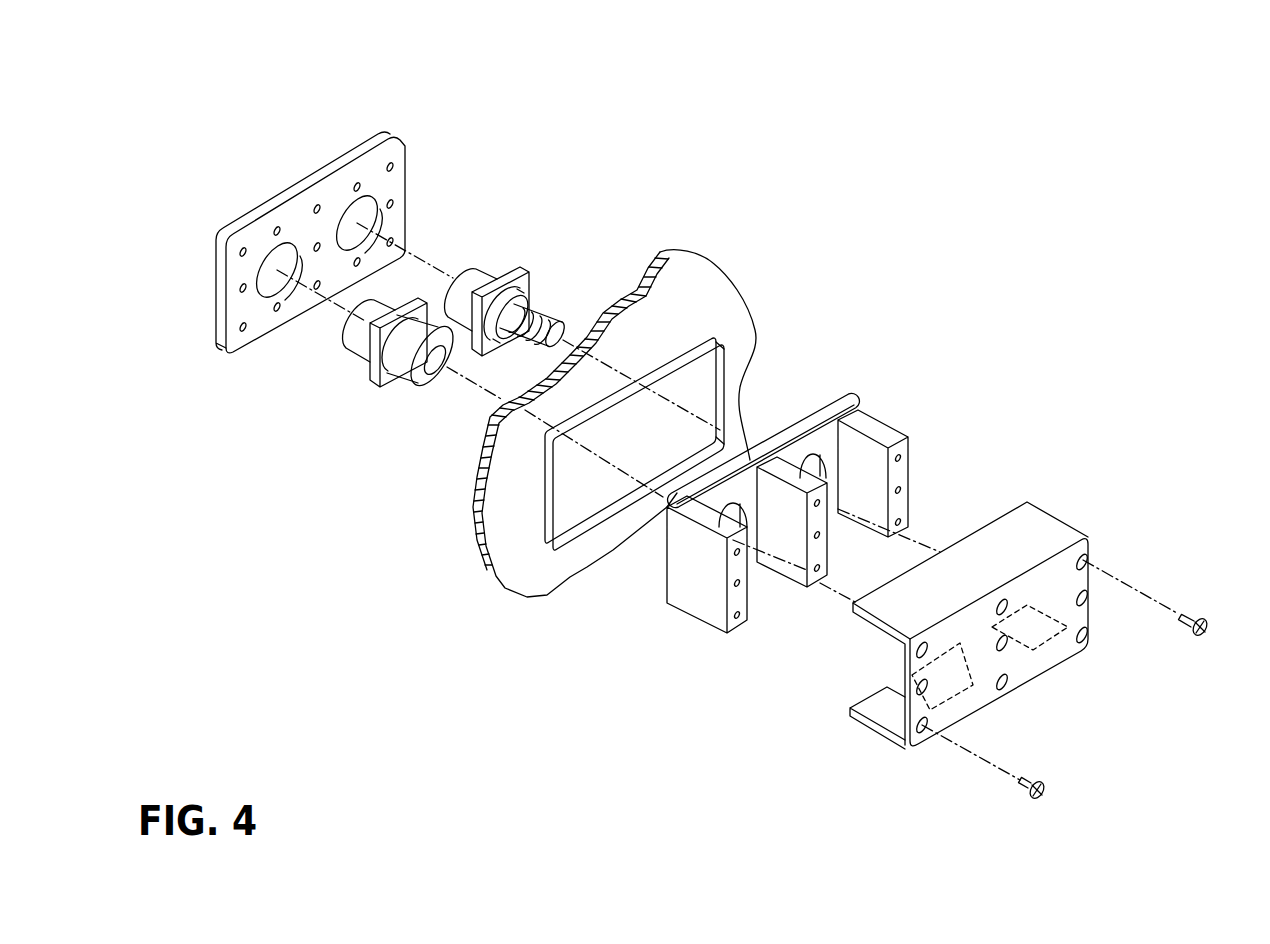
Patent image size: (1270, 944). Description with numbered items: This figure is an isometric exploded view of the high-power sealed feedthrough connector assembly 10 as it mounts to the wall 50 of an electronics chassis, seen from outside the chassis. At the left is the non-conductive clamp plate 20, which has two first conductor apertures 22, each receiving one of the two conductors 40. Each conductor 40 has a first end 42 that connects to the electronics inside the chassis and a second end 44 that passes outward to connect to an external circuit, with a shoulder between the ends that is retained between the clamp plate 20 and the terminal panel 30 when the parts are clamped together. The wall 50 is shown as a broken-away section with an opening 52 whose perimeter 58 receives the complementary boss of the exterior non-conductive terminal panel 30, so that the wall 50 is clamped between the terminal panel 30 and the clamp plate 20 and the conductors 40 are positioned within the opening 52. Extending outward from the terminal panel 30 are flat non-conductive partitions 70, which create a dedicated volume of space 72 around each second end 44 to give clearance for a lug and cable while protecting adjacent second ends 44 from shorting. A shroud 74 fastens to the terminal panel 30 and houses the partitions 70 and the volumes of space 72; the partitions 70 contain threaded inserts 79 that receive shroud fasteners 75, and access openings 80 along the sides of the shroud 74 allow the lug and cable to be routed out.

The connector assembly 10 is at (255, 110).
The non-conductive clamp plate 20 is at (398, 135).
The first conductor aperture 22 is at (357, 210).
The terminal panel 30 is at (847, 397).
The conductor 40 is at (548, 322).
The first end 42 is at (481, 246).
The second end 44 is at (408, 370).
The wall 50 is at (743, 297).
The opening 52 is at (700, 395).
The perimeter 58 is at (720, 373).
The partition 70 is at (878, 432).
The volume of space 72 is at (850, 546).
The shroud 74 is at (1033, 540).
The shroud fastener 75 is at (1203, 620).
The threaded insert 79 is at (898, 490).
The access opening 80 is at (972, 633).